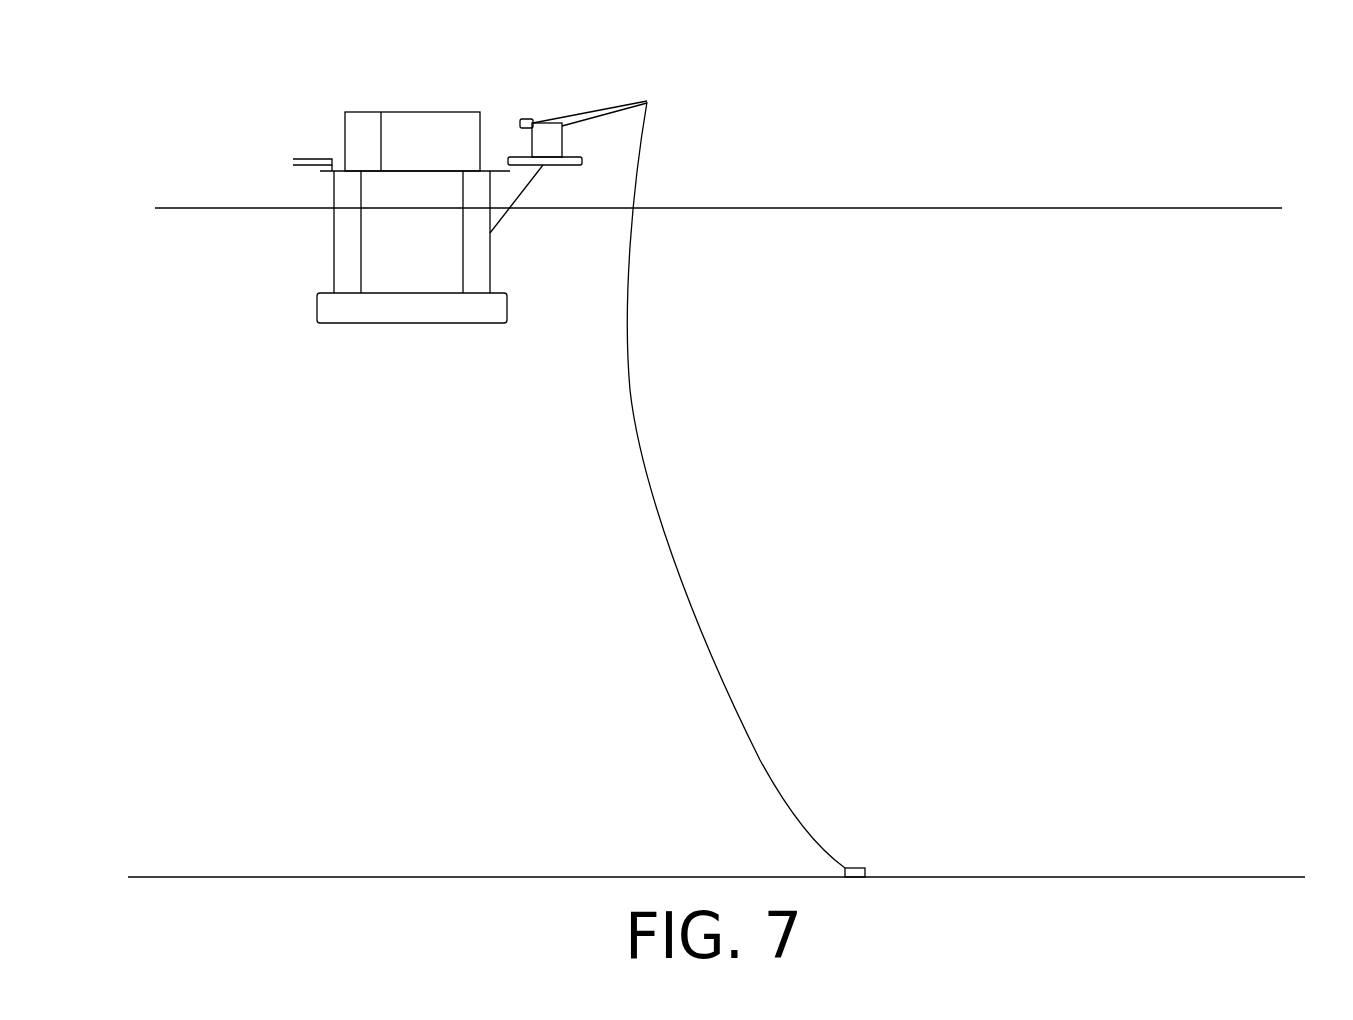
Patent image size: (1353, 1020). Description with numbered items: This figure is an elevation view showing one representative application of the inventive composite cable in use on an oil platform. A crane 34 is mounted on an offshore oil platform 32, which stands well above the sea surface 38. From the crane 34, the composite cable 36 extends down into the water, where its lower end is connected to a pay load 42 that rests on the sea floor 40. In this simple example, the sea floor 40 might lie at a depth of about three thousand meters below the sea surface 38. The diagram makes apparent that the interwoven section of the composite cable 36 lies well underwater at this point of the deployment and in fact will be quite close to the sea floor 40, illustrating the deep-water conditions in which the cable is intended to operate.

The offshore oil platform 32 is at (418, 187).
The crane 34 is at (599, 102).
The composite cable 36 is at (736, 485).
The sea surface 38 is at (718, 158).
The sea floor 40 is at (716, 824).
The pay load 42 is at (919, 792).